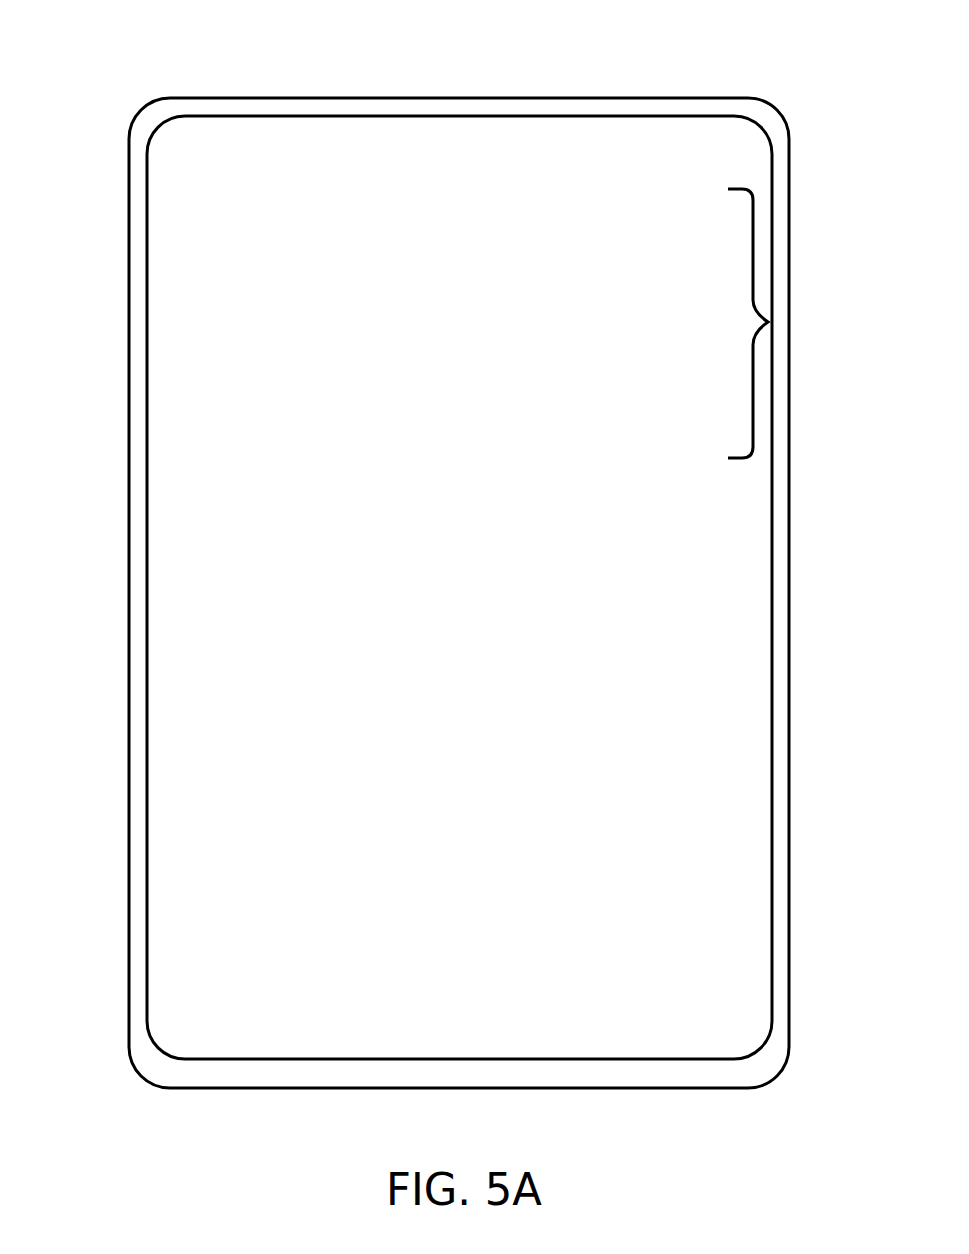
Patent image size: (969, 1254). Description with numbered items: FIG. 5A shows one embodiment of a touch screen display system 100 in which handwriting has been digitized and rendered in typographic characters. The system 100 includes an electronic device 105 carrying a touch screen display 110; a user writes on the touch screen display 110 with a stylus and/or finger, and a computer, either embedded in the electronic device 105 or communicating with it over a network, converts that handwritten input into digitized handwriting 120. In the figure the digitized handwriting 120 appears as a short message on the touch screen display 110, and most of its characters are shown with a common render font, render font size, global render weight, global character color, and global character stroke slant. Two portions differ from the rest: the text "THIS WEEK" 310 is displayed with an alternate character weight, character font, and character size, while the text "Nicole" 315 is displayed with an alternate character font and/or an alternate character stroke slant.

The touch screen display system 100 is at (118, 69).
The electronic device 105 is at (128, 415).
The touch screen display 110 is at (185, 767).
The digitized handwriting 120 is at (768, 322).
The text "THIS WEEK" 310 is at (213, 389).
The text "Nicole" 315 is at (213, 442).